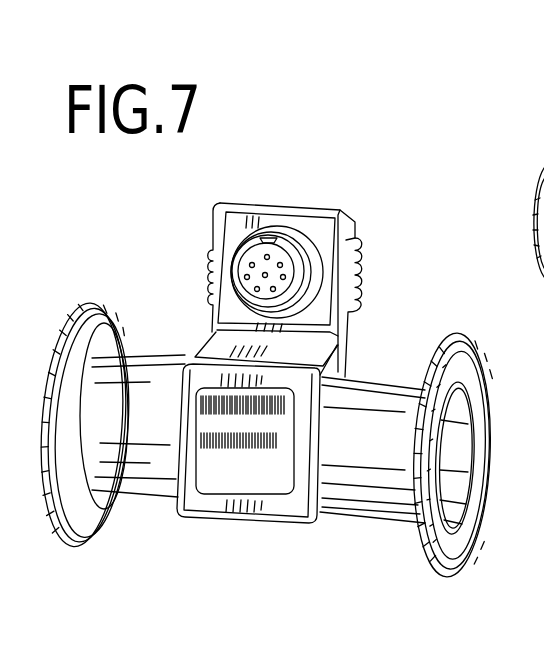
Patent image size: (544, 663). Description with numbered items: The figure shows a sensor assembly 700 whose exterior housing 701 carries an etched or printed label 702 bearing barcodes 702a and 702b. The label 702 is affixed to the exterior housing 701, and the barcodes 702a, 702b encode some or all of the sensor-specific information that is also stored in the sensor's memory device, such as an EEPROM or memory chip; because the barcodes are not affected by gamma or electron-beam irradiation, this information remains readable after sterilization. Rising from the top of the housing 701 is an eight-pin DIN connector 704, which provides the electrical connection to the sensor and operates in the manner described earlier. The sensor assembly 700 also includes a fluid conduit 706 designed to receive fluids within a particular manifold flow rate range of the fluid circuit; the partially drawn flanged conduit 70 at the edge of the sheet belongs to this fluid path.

The sensor assembly 700 is at (289, 365).
The exterior housing 701 is at (195, 501).
The label 702 is at (270, 429).
The barcode 702a is at (208, 407).
The barcode 702b is at (283, 465).
The 8-Pin DIN connector 704 is at (243, 262).
The fluid conduit 706 is at (543, 178).
The pipe flange 70 is at (435, 447).